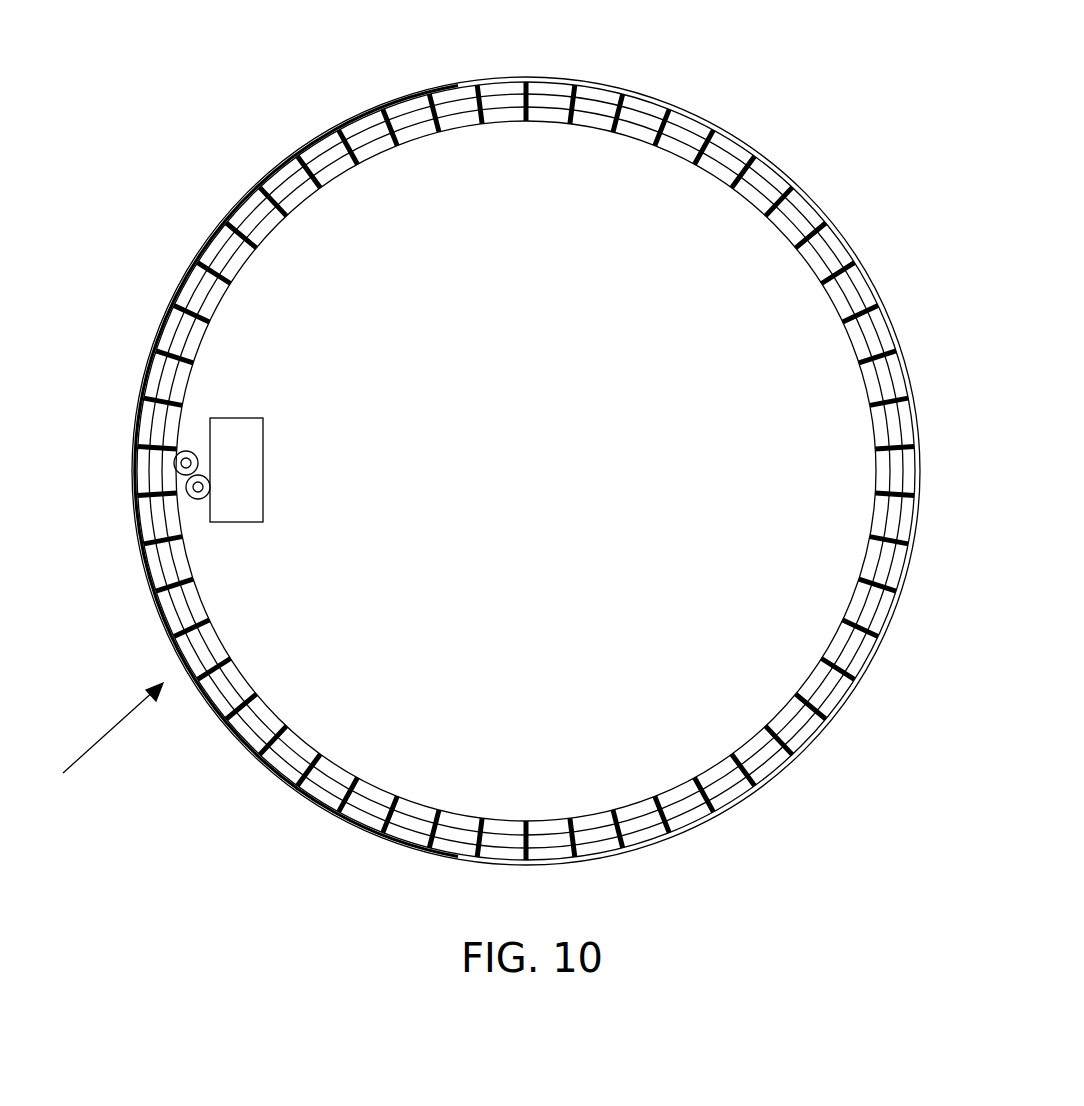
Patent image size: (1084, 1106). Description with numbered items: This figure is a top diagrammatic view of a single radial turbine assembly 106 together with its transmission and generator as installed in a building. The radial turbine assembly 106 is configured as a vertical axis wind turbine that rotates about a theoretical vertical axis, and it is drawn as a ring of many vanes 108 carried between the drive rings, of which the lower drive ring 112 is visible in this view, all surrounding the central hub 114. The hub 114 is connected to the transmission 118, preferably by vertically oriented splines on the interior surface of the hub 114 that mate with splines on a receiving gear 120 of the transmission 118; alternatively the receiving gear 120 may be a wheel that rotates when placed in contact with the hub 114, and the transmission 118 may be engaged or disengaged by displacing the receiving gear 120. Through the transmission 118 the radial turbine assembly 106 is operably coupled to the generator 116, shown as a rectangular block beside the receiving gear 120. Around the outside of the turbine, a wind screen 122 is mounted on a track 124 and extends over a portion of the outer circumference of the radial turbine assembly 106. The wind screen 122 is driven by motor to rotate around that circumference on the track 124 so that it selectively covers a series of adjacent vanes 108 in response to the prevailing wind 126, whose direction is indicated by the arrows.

The radial turbine assembly 106 is at (188, 232).
The vanes 108 is at (663, 133).
The lower drive ring 112 is at (498, 102).
The hub 114 is at (362, 155).
The generator 116 is at (252, 450).
The transmission 118 is at (192, 513).
The receiving gear 120 is at (182, 450).
The wind screen 122 is at (355, 113).
The track 124 is at (590, 80).
The wind 126 is at (250, 890).